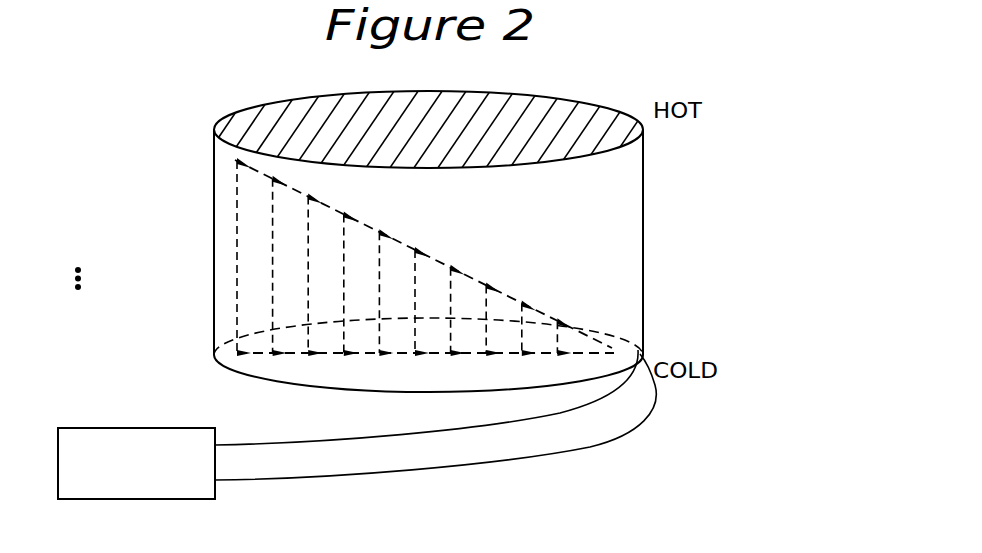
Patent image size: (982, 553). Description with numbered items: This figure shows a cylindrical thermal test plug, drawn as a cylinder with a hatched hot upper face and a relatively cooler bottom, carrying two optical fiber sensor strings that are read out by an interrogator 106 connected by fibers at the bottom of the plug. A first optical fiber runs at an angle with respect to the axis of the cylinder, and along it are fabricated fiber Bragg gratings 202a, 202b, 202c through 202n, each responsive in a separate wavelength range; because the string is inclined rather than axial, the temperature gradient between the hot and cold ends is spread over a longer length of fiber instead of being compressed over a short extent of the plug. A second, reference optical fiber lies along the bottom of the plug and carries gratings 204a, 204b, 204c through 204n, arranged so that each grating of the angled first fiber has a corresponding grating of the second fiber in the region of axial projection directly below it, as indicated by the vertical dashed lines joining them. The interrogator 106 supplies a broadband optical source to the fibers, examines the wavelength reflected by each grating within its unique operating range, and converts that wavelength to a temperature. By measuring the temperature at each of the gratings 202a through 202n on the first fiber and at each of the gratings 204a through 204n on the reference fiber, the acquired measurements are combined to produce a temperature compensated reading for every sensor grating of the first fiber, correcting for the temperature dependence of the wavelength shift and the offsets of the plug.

The grating 202a is at (238, 164).
The grating 202b is at (273, 182).
The grating 202c is at (308, 199).
The grating 202n is at (567, 321).
The grating 204a is at (242, 352).
The grating 204b is at (277, 351).
The grating 204c is at (314, 350).
The grating 204n is at (567, 357).
The interrogator 106 is at (133, 448).